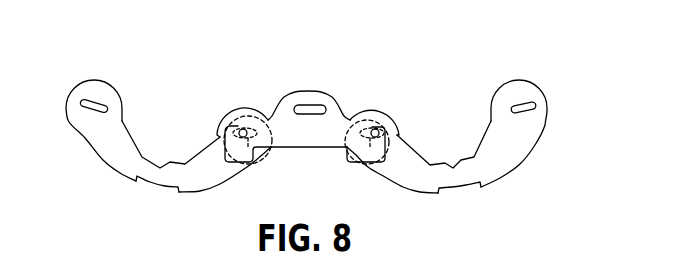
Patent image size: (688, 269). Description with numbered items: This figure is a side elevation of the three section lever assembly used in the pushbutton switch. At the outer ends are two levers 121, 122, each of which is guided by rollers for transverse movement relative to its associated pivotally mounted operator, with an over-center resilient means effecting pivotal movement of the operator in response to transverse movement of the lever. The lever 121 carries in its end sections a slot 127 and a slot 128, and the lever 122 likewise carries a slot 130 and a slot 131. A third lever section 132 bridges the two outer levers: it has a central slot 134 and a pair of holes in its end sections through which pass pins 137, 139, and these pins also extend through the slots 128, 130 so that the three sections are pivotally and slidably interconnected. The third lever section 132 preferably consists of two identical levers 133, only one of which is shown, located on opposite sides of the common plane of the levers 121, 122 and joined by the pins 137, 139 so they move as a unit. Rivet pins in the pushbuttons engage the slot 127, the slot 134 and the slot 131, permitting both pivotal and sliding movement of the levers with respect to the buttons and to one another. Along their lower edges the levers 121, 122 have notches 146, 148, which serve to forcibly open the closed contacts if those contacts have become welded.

The lever 121 is at (130, 133).
The lever 122 is at (420, 156).
The slot 127 is at (100, 104).
The slot 128 is at (257, 170).
The slot 130 is at (361, 167).
The slot 131 is at (523, 104).
The third lever section 132 is at (309, 146).
The lever 133 is at (300, 145).
The central slot 134 is at (305, 104).
The pin 137 is at (243, 129).
The pin 139 is at (376, 129).
The notch 146 is at (153, 187).
The notch 148 is at (457, 192).